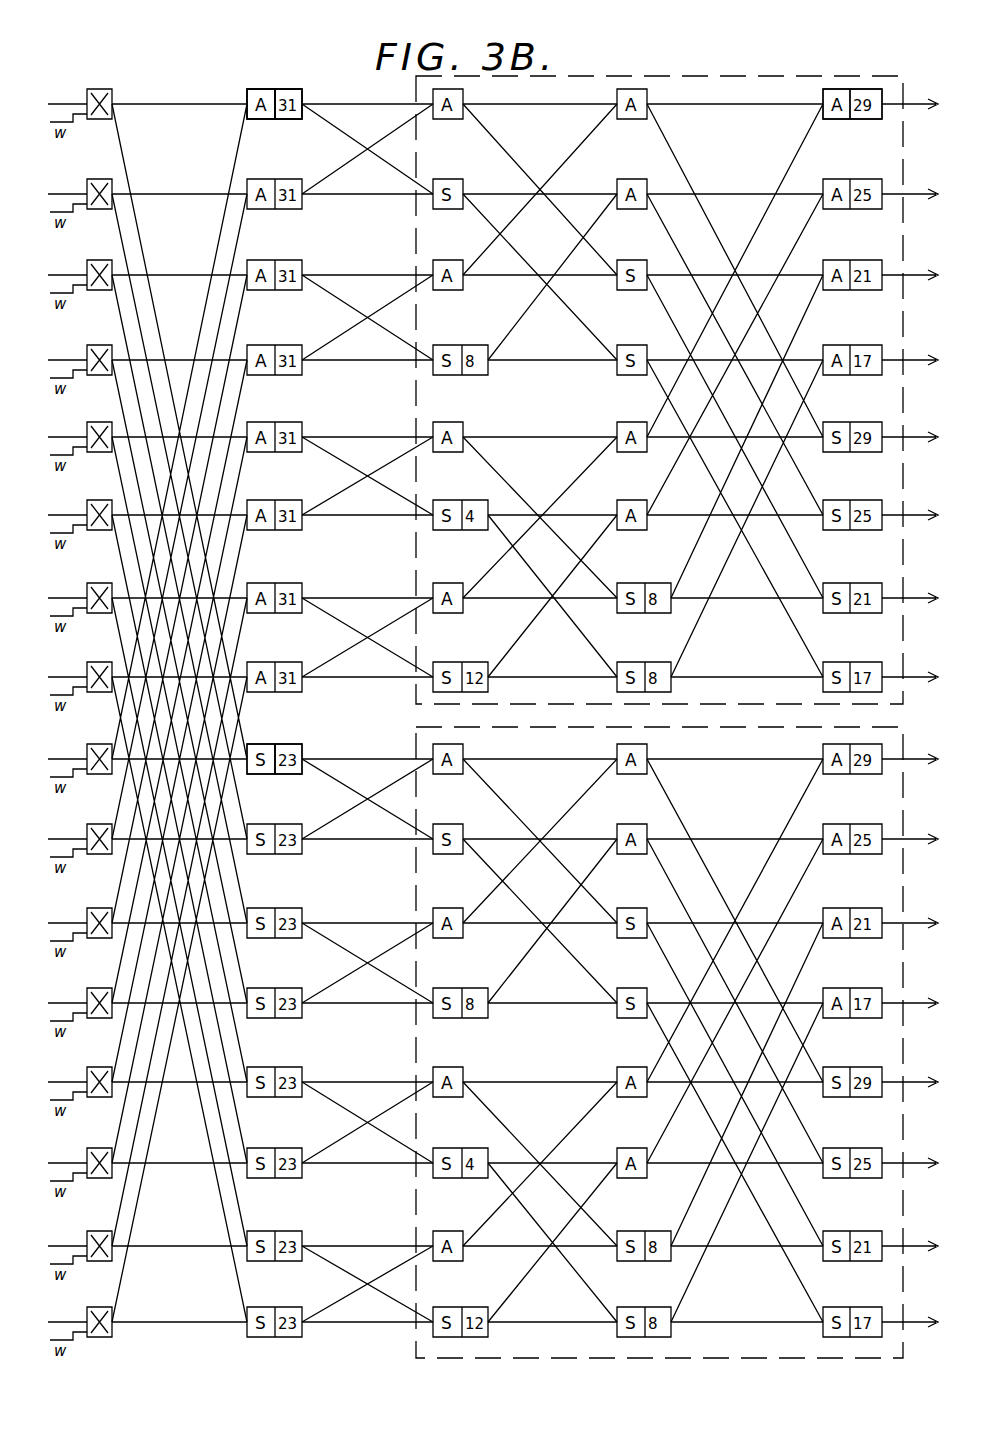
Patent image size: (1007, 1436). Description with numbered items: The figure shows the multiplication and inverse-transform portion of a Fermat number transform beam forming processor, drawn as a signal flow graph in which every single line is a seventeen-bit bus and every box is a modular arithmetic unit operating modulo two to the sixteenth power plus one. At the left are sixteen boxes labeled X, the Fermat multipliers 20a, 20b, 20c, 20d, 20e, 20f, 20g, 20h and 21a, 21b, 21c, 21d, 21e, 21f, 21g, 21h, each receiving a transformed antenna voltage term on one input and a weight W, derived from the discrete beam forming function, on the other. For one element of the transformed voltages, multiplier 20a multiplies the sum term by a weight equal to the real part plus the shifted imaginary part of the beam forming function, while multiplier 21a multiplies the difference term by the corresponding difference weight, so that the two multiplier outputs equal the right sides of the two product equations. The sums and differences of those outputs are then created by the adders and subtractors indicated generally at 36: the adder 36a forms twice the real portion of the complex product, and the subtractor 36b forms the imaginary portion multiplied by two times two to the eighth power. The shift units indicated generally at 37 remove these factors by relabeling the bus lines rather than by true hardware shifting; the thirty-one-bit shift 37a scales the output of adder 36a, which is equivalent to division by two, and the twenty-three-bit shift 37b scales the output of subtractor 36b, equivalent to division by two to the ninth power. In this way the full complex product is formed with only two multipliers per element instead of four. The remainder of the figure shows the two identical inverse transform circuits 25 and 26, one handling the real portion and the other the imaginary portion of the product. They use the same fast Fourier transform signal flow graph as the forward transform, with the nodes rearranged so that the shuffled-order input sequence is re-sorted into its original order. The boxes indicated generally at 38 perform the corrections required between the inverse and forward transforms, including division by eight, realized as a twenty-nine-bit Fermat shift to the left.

The Fermat multiplier 20a is at (102, 88).
The Fermat multiplier 20b is at (97, 178).
The Fermat multiplier 20c is at (97, 259).
The Fermat multiplier 20d is at (97, 344).
The Fermat multiplier 20e is at (97, 421).
The Fermat multiplier 20f is at (97, 499).
The Fermat multiplier 20g is at (97, 582).
The Fermat multiplier 20h is at (97, 661).
The Fermat multiplier 21a is at (97, 743).
The Fermat multiplier 21b is at (97, 823).
The Fermat multiplier 21c is at (97, 907).
The Fermat multiplier 21d is at (97, 987).
The Fermat multiplier 21e is at (97, 1066).
The Fermat multiplier 21f is at (97, 1147).
The Fermat multiplier 21g is at (97, 1230).
The Fermat multiplier 21h is at (97, 1306).
The adders and subtractors 36 is at (261, 78).
The adder 36a is at (247, 96).
The subtractor 36b is at (252, 776).
The shift units 37 is at (299, 84).
The 31-bit shift box 37a is at (290, 120).
The 23-bit shift box 37b is at (300, 746).
The inverse transform circuit 25 is at (690, 76).
The inverse transform circuit 26 is at (690, 1358).
The correction boxes 38 is at (878, 88).